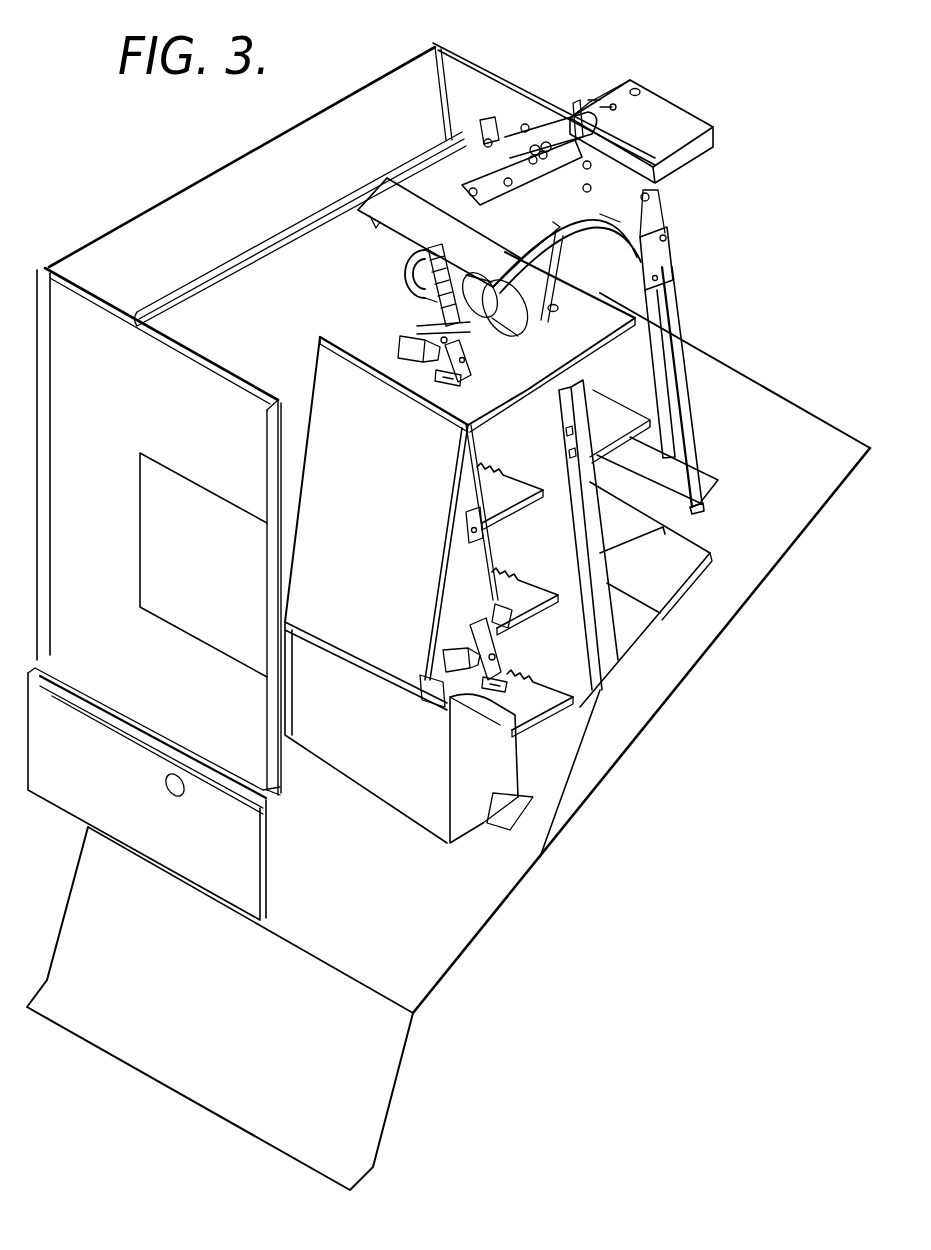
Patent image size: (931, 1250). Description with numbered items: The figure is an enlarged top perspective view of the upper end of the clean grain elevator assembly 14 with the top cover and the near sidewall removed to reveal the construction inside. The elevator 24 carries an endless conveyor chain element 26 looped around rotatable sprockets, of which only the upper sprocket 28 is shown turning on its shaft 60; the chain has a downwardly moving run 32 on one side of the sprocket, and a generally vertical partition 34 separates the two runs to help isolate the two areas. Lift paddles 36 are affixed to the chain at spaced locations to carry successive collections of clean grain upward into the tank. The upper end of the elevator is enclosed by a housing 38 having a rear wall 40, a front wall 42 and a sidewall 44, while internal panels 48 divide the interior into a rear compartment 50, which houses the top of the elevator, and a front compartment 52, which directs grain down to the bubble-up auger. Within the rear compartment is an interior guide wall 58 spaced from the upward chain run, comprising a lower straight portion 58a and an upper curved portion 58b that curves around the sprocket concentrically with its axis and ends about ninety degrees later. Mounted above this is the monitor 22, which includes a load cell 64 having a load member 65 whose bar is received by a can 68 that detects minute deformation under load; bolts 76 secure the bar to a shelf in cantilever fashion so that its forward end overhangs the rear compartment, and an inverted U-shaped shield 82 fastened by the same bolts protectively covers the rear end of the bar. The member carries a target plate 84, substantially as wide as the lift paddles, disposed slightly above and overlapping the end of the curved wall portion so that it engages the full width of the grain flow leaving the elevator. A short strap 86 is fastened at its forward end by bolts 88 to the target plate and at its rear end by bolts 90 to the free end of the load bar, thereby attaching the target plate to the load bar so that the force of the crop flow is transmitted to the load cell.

The elevator assembly 14 is at (687, 287).
The monitor 22 is at (670, 88).
The elevator 24 is at (404, 301).
The conveyor chain element 26 is at (511, 646).
The upper sprocket 28 is at (483, 367).
The downwardly moving run 32 is at (417, 331).
The partition 34 is at (603, 628).
The lift paddles 36 is at (613, 527).
The housing 38 is at (80, 240).
The rear wall 40 is at (688, 361).
The front wall 42 is at (98, 333).
The sidewall 44 is at (245, 170).
The internal panels 48 is at (409, 590).
The rear compartment 50 is at (673, 507).
The front compartment 52 is at (297, 407).
The interior guide wall 58 is at (680, 313).
The lower straight portion 58a is at (667, 410).
The upper curved portion 58b is at (585, 226).
The shaft 60 is at (531, 327).
The load cell 64 is at (553, 118).
The load member 65 is at (537, 142).
The can 68 is at (583, 133).
The bolts 76 is at (607, 85).
The shield 82 is at (683, 121).
The target plate 84 is at (400, 180).
The strap 86 is at (524, 190).
The bolts 88 is at (463, 187).
The bolts 90 is at (483, 127).